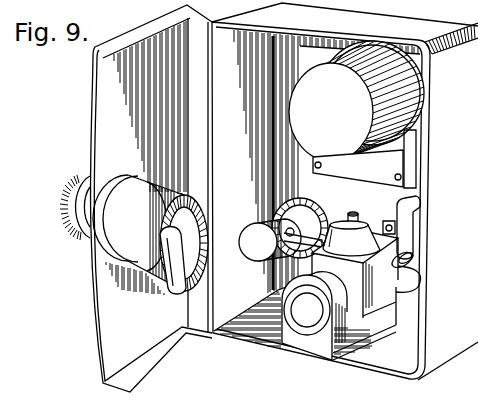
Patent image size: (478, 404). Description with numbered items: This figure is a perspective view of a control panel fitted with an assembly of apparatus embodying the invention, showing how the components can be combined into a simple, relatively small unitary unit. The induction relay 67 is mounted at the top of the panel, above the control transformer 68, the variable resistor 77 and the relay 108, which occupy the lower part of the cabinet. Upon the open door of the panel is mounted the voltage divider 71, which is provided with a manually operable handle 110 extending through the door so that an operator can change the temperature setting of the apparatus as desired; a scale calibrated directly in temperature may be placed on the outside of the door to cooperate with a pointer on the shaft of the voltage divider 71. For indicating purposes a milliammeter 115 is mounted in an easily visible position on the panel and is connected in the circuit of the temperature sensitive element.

The induction relay 67 is at (418, 75).
The control transformer 68 is at (383, 331).
The voltage divider 71 is at (183, 192).
The variable resistor 77 is at (272, 216).
The relay 108 is at (421, 265).
The manually operable handle 110 is at (80, 177).
The milliammeter 115 is at (334, 332).